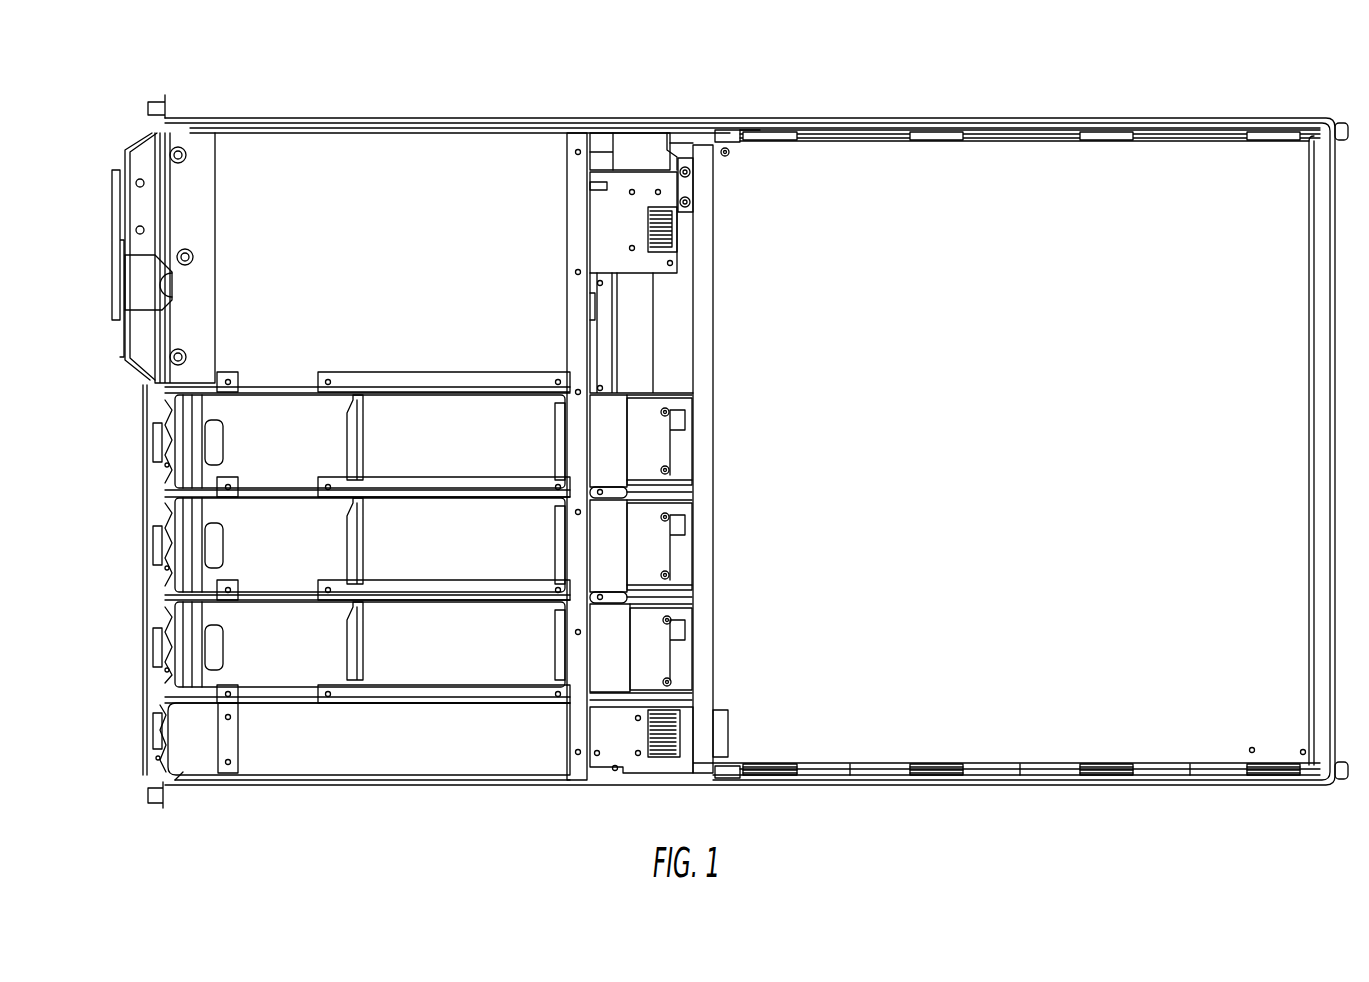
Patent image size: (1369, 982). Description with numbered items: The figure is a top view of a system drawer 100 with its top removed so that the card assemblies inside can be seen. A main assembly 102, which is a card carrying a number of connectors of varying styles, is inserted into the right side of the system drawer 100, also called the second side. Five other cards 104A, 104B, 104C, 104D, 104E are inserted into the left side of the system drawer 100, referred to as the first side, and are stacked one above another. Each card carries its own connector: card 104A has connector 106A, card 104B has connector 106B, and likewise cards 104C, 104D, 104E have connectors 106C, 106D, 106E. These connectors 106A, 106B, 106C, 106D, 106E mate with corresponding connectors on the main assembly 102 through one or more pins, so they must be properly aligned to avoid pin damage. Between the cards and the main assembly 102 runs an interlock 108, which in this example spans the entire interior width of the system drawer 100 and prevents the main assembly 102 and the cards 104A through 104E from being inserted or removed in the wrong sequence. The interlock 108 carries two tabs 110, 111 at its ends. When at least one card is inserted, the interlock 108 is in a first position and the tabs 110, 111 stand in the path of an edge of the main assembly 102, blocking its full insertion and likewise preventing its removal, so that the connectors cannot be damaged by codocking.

The system drawer 100 is at (1036, 54).
The main assembly 102 is at (745, 463).
The card 104A is at (243, 241).
The card 104B is at (250, 446).
The card 104C is at (250, 553).
The card 104D is at (250, 650).
The card 104E is at (250, 748).
The connector 106A is at (678, 250).
The connector 106B is at (685, 440).
The connector 106C is at (685, 560).
The connector 106D is at (682, 648).
The connector 106E is at (687, 729).
The interlock 108 is at (636, 150).
The tab 110 is at (733, 133).
The tab 111 is at (735, 772).